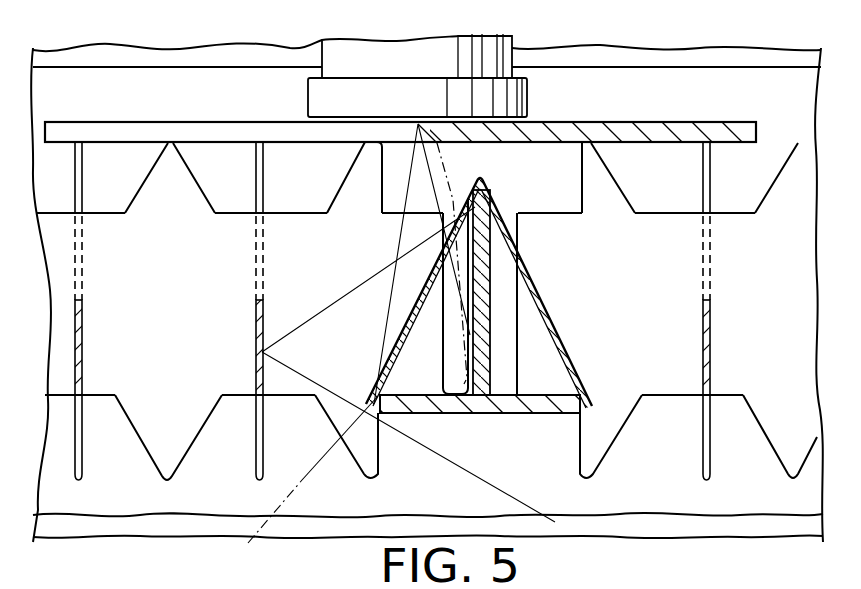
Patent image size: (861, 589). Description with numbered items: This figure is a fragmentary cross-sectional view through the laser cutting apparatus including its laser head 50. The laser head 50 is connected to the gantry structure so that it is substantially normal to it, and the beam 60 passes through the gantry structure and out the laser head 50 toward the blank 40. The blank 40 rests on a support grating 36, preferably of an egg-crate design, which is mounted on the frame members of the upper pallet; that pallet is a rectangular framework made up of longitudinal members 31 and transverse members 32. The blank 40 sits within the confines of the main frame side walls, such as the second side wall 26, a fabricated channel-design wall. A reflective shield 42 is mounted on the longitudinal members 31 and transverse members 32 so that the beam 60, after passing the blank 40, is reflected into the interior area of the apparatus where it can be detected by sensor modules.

The second side wall 26 is at (684, 57).
The longitudinal members 31 is at (673, 179).
The transverse members 32 is at (536, 403).
The support grating 36 is at (160, 173).
The blank 40 is at (243, 133).
The reflective shield 42 is at (541, 292).
The laser head 50 is at (472, 46).
The beam 60 is at (418, 124).